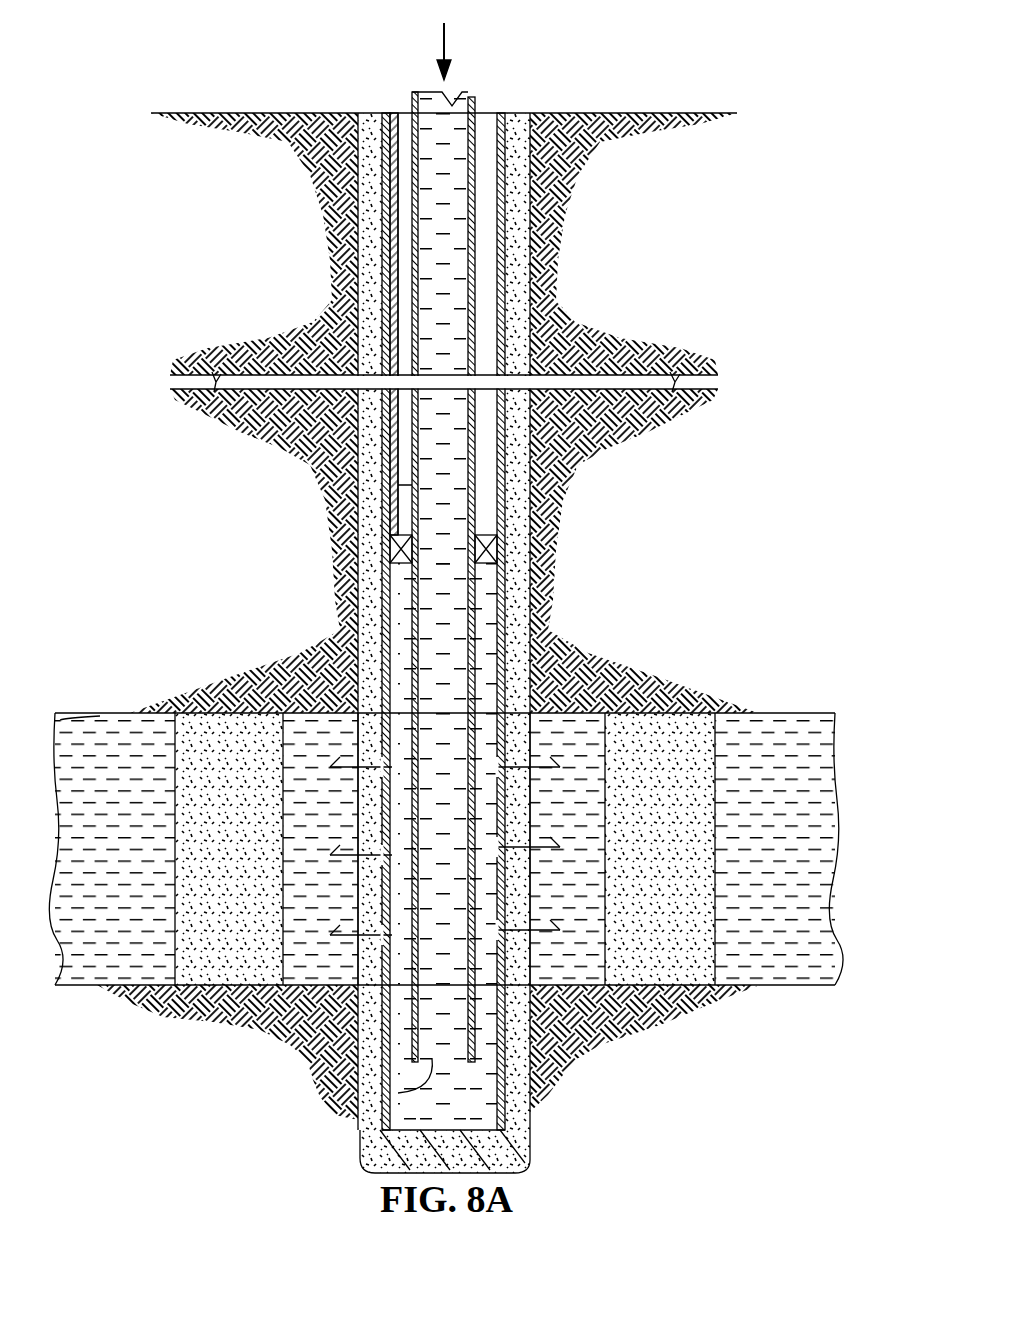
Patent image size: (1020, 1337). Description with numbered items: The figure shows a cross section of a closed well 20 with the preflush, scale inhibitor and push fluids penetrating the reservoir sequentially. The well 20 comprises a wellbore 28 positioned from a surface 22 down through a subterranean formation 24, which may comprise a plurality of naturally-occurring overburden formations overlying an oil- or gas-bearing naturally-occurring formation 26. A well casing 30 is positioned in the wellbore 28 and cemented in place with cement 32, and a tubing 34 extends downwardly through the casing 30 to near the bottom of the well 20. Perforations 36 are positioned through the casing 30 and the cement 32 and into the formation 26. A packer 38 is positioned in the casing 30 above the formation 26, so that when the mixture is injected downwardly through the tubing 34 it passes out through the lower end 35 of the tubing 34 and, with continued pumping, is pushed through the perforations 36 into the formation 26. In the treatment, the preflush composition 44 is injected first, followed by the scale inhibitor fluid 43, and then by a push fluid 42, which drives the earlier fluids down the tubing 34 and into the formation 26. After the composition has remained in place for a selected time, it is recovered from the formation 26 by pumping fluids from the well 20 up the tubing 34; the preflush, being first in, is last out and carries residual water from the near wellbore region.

The well 20 is at (356, 58).
The surface 22 is at (270, 112).
The subterranean formation 24 is at (682, 518).
The oil- or gas-bearing formation 26 is at (873, 858).
The wellbore 28 is at (535, 300).
The well casing 30 is at (372, 219).
The cement 32 is at (372, 256).
The tubing 34 is at (400, 489).
The lower end of tubing 35 is at (398, 1093).
The perforations 36 is at (549, 765).
The packer 38 is at (500, 562).
The push fluid 42 is at (455, 100).
The scale inhibitor fluid 43 is at (238, 985).
The preflush composition 44 is at (101, 722).